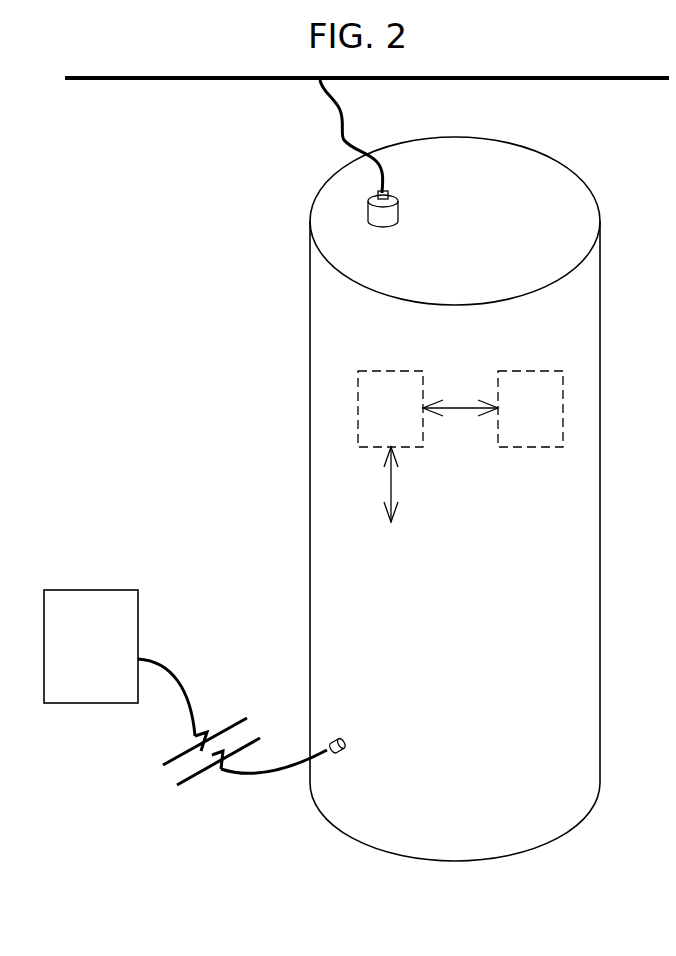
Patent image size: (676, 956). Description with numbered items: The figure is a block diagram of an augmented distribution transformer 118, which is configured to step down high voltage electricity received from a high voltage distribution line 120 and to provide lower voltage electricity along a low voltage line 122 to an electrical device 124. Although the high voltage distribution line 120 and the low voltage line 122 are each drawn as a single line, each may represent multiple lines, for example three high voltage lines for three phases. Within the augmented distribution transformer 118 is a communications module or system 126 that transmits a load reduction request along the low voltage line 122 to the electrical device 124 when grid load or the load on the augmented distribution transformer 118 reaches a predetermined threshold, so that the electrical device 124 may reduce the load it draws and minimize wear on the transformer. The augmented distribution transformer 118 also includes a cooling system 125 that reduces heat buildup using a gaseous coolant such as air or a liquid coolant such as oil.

The augmented distribution transformer 118 is at (471, 690).
The high voltage distribution line 120 is at (637, 81).
The low voltage line 122 is at (260, 778).
The electrical device 124 is at (111, 660).
The cooling system 125 is at (358, 408).
The communications module or system 126 is at (563, 408).